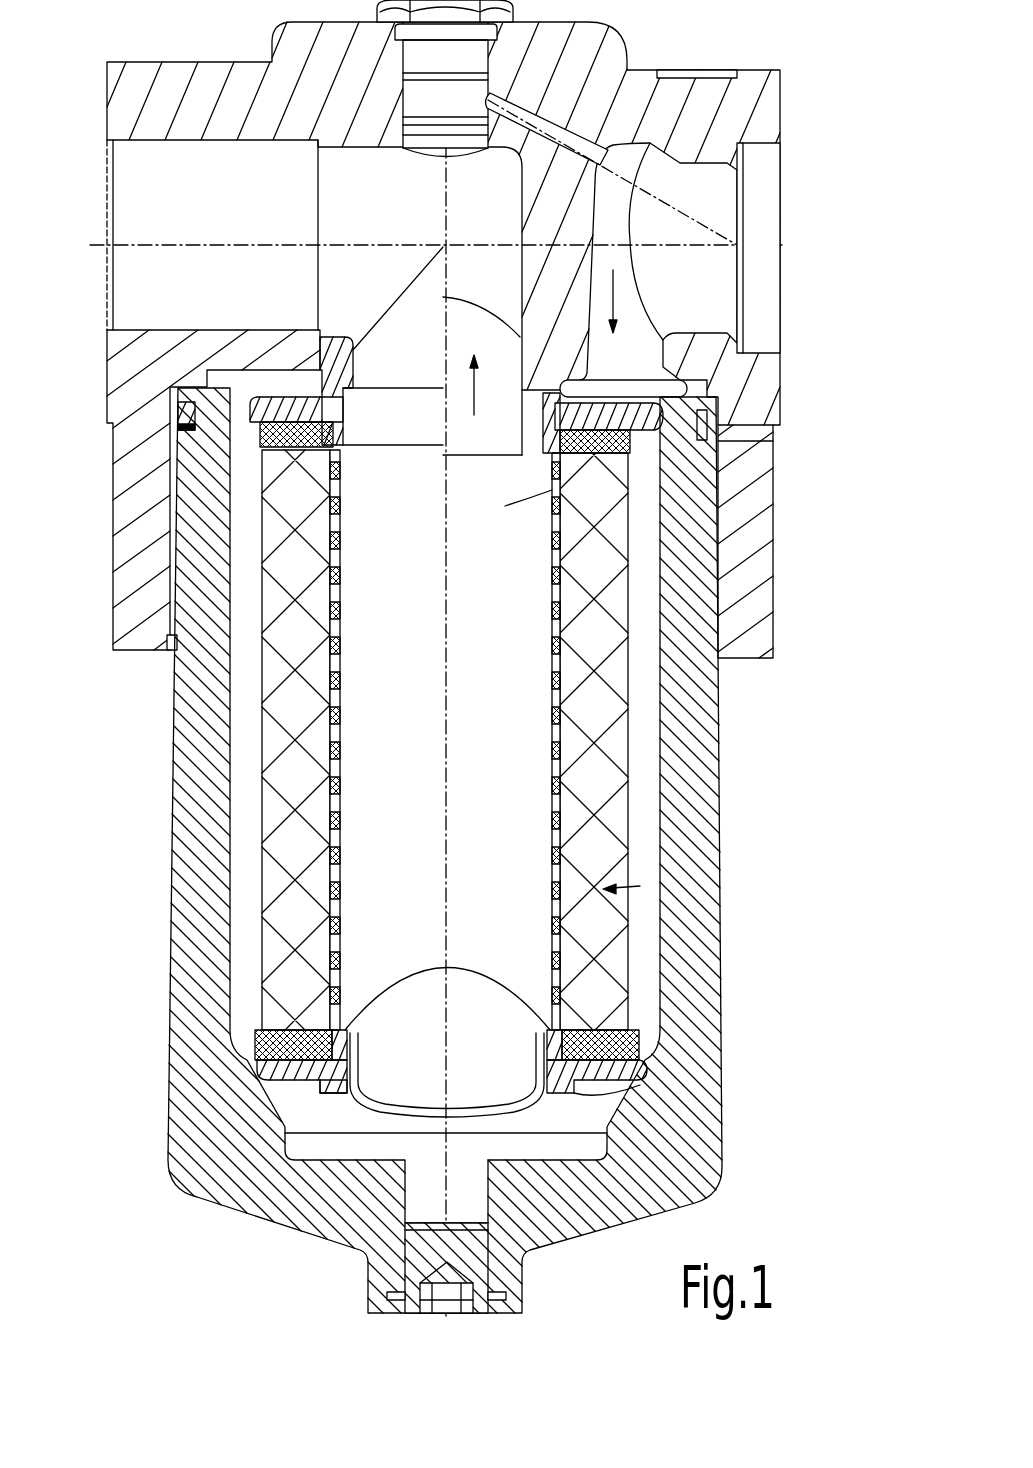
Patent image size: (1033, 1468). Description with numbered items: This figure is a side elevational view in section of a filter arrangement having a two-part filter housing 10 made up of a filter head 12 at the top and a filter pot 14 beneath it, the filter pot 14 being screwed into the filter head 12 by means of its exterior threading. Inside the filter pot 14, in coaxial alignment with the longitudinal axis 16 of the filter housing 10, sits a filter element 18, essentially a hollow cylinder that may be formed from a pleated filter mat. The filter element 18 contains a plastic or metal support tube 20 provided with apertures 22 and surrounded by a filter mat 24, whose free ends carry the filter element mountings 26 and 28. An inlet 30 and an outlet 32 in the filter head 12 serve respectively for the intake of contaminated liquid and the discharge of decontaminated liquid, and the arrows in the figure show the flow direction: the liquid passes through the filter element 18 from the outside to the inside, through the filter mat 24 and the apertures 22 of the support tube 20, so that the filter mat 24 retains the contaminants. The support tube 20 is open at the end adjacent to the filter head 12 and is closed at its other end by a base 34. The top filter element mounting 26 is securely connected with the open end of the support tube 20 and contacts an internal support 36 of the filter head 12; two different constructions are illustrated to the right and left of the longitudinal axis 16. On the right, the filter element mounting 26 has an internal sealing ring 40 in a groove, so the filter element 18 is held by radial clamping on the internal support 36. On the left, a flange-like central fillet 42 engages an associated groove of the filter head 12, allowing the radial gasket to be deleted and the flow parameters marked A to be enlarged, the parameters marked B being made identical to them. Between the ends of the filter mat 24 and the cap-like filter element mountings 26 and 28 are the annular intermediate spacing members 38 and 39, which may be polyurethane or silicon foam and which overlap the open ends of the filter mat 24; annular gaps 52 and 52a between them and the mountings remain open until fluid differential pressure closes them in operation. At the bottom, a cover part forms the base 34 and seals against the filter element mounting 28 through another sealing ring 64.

The filter housing 10 is at (481, 850).
The filter head 12 is at (765, 96).
The filter pot 14 is at (690, 918).
The longitudinal axis 16 is at (473, 737).
The filter element 18 is at (640, 886).
The support tube 20 is at (445, 740).
The apertures 22 is at (341, 540).
The filter mat 24 is at (275, 820).
The filter element mounting 26 is at (600, 403).
The filter element mounting 28 is at (535, 1083).
The inlet port 30 is at (762, 210).
The outlet 32 is at (214, 208).
The base 34 is at (483, 1100).
The internal support 36 is at (456, 395).
The intermediate spacing member 38 is at (640, 440).
The intermediate spacing member 39 is at (645, 1035).
The sealing ring 40 is at (543, 408).
The central fillet 42 is at (342, 352).
The annular gap 52 is at (603, 373).
The annular gap 52a is at (605, 1092).
The sealing ring 64 is at (350, 1077).